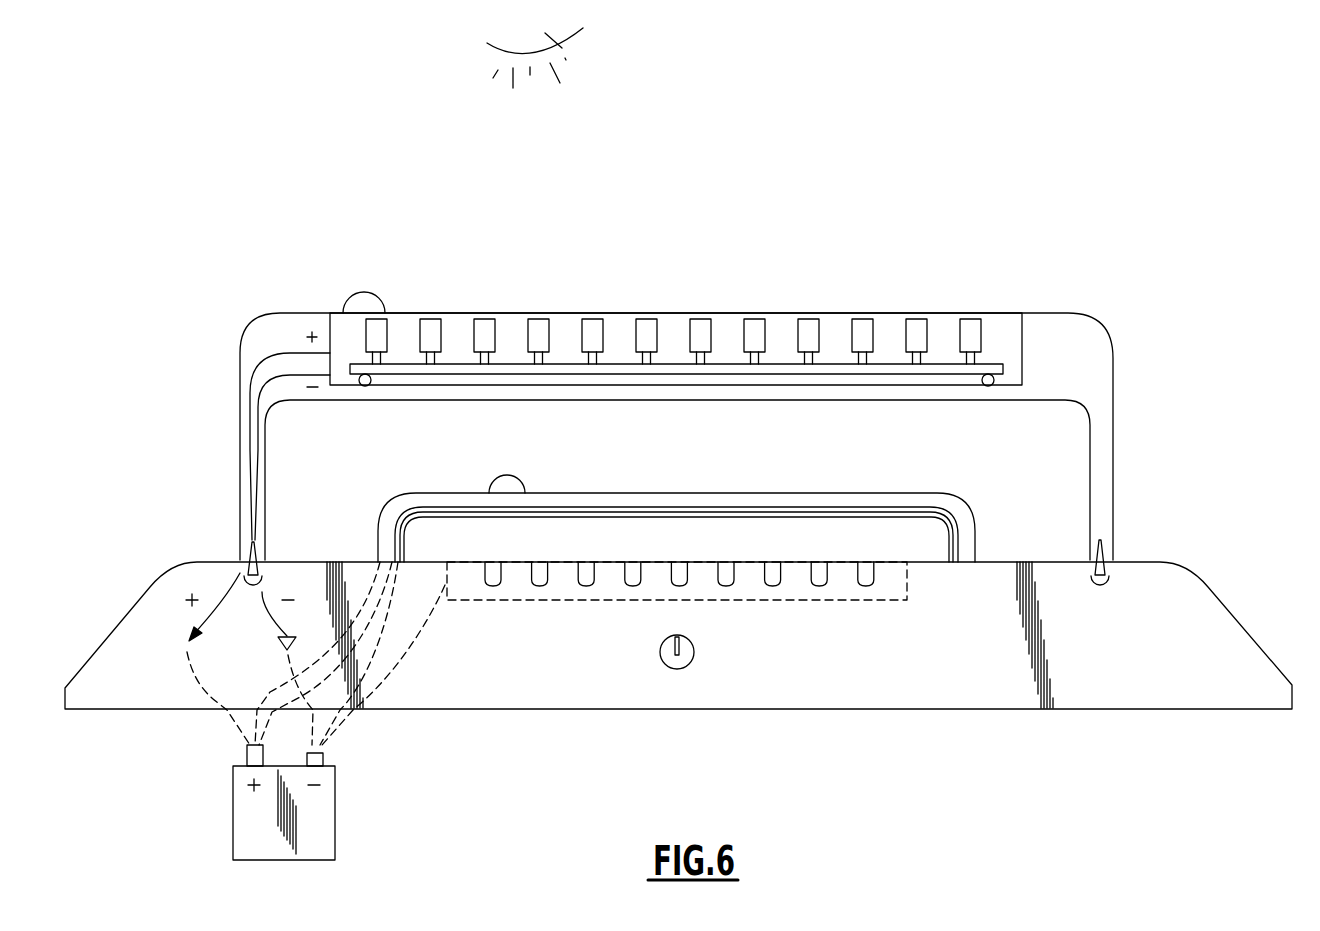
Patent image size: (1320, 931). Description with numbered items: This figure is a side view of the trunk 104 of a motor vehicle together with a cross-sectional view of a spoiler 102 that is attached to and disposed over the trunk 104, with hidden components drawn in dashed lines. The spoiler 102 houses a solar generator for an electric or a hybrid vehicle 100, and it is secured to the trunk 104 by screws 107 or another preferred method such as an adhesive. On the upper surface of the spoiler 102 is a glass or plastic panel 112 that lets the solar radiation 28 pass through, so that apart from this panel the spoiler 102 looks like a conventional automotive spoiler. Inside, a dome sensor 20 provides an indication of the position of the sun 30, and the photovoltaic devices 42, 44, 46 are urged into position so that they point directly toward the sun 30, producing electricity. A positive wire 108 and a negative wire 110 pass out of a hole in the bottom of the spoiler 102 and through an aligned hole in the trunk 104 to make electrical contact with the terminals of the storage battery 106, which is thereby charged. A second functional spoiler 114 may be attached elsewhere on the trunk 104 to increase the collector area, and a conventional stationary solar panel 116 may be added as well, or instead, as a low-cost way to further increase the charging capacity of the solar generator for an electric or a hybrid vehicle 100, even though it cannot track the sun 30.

The dome sensor 20 is at (345, 286).
The solar radiation 28 is at (567, 80).
The sun 30 is at (562, 48).
The photovoltaic device 42 is at (388, 336).
The photovoltaic device 44 is at (443, 336).
The photovoltaic device 46 is at (496, 336).
The solar generator for an electric or a hybrid vehicle 100 is at (952, 187).
The spoiler 102 is at (1102, 385).
The trunk 104 is at (1217, 595).
The storage battery 106 is at (320, 822).
The screws 107 is at (265, 582).
The positive wire 108 is at (255, 352).
The negative wire 110 is at (275, 400).
The glass or plastic panel 112 is at (664, 320).
The second functional spoiler 114 is at (726, 493).
The solar panel 116 is at (782, 600).